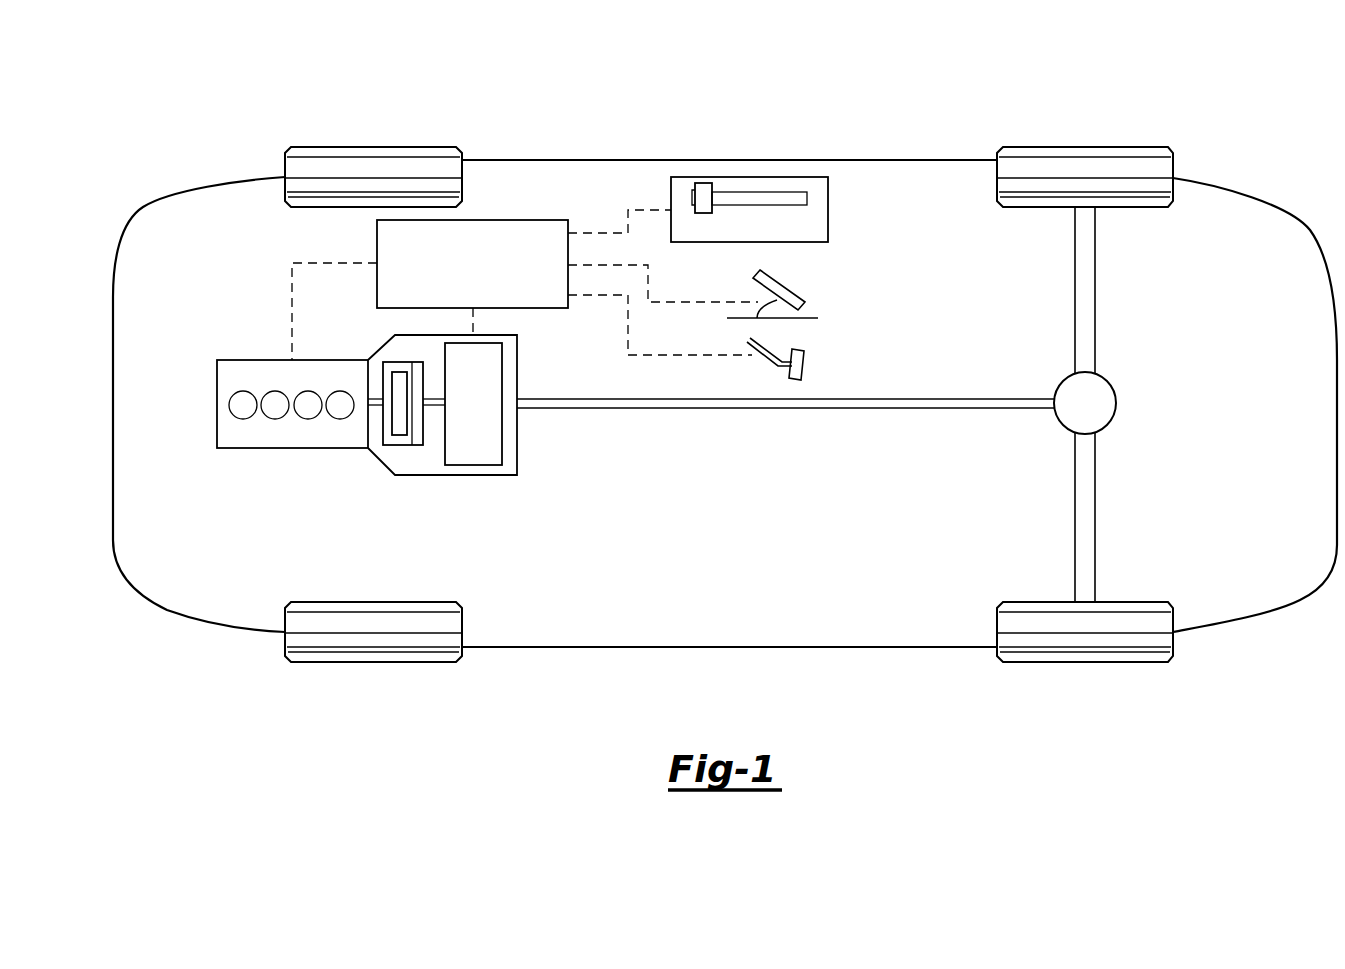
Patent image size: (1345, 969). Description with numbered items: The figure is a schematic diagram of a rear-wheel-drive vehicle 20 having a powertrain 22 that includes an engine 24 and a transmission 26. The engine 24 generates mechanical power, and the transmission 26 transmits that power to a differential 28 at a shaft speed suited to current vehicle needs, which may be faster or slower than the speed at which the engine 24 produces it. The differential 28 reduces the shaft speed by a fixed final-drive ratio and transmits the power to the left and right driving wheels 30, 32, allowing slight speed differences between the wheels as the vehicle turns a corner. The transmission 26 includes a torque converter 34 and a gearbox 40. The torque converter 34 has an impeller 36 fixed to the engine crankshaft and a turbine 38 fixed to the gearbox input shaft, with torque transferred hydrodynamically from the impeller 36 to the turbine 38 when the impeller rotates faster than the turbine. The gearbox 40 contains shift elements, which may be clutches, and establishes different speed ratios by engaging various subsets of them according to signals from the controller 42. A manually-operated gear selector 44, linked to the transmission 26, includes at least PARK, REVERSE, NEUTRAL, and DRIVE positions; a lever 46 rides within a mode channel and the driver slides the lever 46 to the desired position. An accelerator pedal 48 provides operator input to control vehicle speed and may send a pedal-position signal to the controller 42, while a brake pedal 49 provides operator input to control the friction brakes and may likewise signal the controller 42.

The vehicle 20 is at (762, 75).
The powertrain 22 is at (348, 476).
The engine 24 is at (243, 360).
The transmission 26 is at (508, 475).
The differential 28 is at (1117, 406).
The left driving wheel 30 is at (1082, 147).
The right driving wheel 32 is at (1085, 662).
The torque converter 34 is at (397, 445).
The impeller 36 is at (418, 445).
The turbine 38 is at (400, 372).
The gearbox 40 is at (472, 465).
The controller 42 is at (473, 220).
The gear selector 44 is at (828, 212).
The lever 46 is at (705, 183).
The accelerator pedal 48 is at (783, 293).
The brake pedal 49 is at (804, 364).